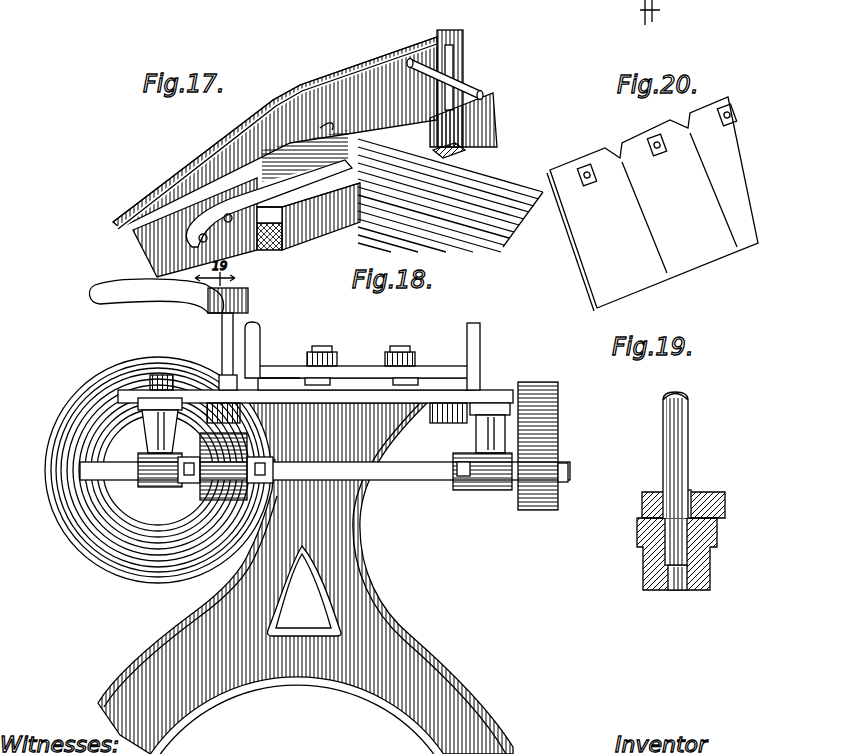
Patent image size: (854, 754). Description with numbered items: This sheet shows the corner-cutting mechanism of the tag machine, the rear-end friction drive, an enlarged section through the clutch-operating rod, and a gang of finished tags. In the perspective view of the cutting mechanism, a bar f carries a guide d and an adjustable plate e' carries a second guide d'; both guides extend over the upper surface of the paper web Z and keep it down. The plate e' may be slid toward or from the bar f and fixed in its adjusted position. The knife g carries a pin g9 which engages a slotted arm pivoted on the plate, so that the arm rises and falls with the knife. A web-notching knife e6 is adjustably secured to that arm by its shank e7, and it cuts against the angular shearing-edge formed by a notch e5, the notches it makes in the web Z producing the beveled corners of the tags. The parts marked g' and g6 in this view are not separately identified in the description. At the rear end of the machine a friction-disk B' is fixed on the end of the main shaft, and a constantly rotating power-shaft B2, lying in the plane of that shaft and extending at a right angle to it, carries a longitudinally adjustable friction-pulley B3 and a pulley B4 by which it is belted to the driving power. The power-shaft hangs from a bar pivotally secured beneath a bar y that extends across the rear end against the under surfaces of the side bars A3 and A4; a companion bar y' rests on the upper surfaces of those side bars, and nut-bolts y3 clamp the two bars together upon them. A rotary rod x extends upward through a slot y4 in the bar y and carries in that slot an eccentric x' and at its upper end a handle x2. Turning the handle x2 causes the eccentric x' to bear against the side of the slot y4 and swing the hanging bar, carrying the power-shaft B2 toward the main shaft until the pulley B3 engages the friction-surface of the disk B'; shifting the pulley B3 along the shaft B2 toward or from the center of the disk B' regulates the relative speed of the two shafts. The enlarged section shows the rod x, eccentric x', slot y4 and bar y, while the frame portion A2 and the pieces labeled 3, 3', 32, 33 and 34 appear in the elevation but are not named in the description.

In FIG. 17, the guide d is at (360, 190).
In FIG. 17, the guide d' is at (320, 203).
In FIG. 17, the bar f is at (195, 227).
In FIG. 17, the plate e' is at (308, 218).
In FIG. 17, the knife g is at (275, 133).
In FIG. 17, the beam projection g' is at (328, 124).
In FIG. 17, the shank e7 is at (447, 37).
In FIG. 17, the web-notching knife e6 is at (432, 118).
In FIG. 17, the notch e5 is at (433, 153).
In FIG. 17, the pin g9 is at (468, 86).
In FIG. 17, the plate / tag g6 is at (655, 12).
In FIG. 20, the plate / tag g6 is at (652, 204).
In FIG. 17, the web Z is at (486, 213).
In FIG. 18, the frame A2 is at (373, 607).
In FIG. 18, the side bar A3 is at (480, 335).
In FIG. 18, the side bar A4 is at (258, 338).
In FIG. 18, the friction-disk B' is at (158, 470).
In FIG. 18, the power-shaft B2 is at (400, 481).
In FIG. 18, the friction-pulley B3 is at (225, 502).
In FIG. 18, the pulley B4 is at (517, 512).
In FIG. 18, the bed plate 3 is at (315, 417).
In FIG. 19, the bed plate 3 is at (693, 554).
In FIG. 18, the bearing 3' is at (472, 446).
In FIG. 18, the bearing 32 is at (137, 430).
In FIG. 18, the nut 33 is at (430, 420).
In FIG. 18, the nut 34 is at (243, 416).
In FIG. 19, the nut 34 is at (712, 577).
In FIG. 18, the rotary rod x is at (214, 351).
In FIG. 19, the rotary rod x is at (657, 455).
In FIG. 19, the eccentric x' is at (654, 514).
In FIG. 18, the handle x2 is at (140, 295).
In FIG. 18, the bar y is at (365, 405).
In FIG. 19, the bar y is at (698, 505).
In FIG. 18, the companion bar y' is at (365, 352).
In FIG. 18, the nut-bolts y3 is at (312, 352).
In FIG. 19, the slot y4 is at (700, 490).